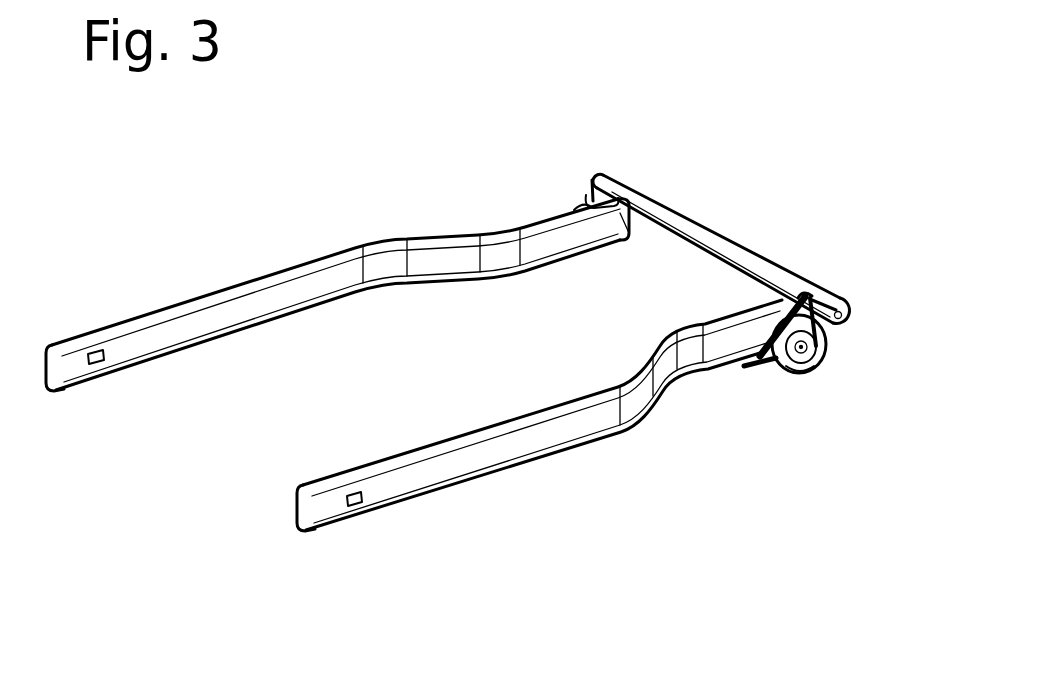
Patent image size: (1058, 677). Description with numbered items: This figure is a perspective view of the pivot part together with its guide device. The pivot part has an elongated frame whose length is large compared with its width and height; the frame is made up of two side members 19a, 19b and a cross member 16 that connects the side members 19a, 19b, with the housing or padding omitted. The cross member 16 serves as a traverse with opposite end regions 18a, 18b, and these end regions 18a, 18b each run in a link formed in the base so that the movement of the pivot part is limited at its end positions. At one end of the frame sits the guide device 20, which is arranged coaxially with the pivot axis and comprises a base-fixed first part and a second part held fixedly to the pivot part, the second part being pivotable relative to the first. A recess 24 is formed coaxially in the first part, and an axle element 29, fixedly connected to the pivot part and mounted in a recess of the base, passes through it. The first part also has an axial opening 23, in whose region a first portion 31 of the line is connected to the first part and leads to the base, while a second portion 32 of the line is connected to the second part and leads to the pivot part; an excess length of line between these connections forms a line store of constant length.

The cross member 16 is at (710, 243).
The end region 18a is at (591, 183).
The end region 18b is at (845, 292).
The side member 19a is at (240, 292).
The side member 19b is at (527, 461).
The guide device 20 is at (776, 374).
The axial opening 23 is at (800, 295).
The recess 24 is at (824, 358).
The axle element 29 is at (804, 364).
The first portion 31 is at (818, 292).
The second portion 32 is at (755, 375).